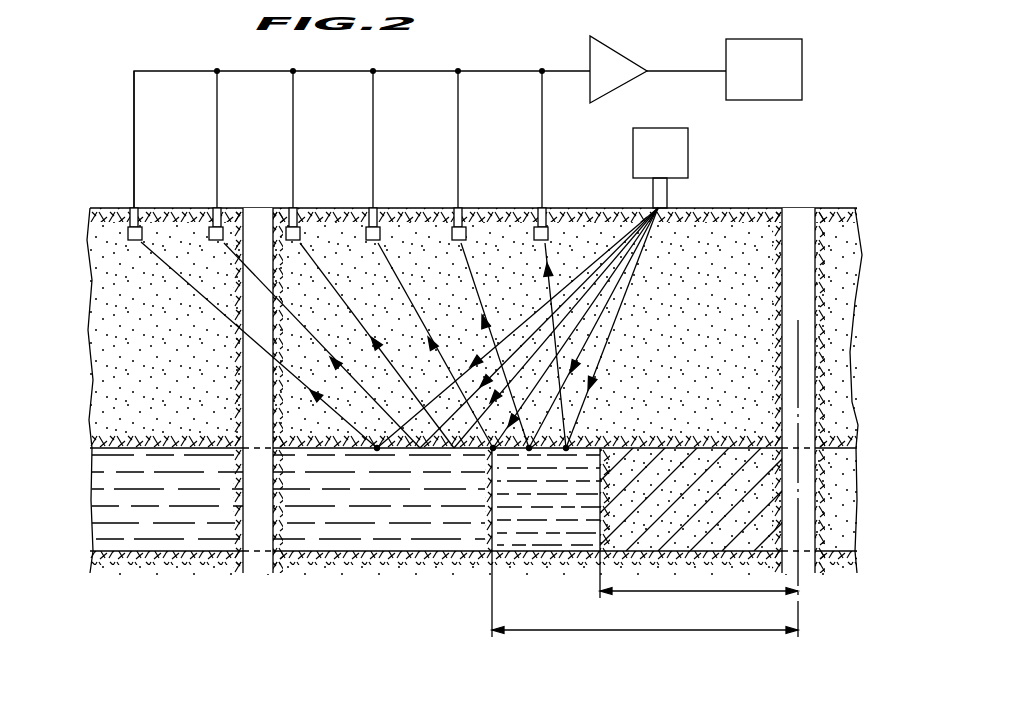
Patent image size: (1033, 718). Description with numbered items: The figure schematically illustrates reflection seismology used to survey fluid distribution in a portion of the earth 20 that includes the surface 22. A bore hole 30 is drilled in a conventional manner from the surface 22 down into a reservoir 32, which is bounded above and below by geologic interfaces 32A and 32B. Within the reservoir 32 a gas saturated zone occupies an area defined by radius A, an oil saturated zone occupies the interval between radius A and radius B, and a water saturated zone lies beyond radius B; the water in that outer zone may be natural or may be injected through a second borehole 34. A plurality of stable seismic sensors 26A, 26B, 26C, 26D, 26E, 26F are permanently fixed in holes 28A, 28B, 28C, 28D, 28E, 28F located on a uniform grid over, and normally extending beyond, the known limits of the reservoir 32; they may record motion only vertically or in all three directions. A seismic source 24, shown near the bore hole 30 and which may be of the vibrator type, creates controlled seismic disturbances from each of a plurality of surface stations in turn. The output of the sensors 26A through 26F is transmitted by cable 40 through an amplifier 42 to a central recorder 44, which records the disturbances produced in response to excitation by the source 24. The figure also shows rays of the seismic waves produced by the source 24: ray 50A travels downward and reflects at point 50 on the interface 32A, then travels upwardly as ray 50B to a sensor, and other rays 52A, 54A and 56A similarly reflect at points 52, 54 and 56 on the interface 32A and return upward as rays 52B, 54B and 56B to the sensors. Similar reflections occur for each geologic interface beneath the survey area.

The earth 20 is at (138, 315).
The surface 22 is at (101, 208).
The seismic source 24 is at (667, 127).
The seismic sensor 26A is at (534, 235).
The seismic sensor 26B is at (451, 233).
The seismic sensor 26C is at (365, 230).
The seismic sensor 26D is at (286, 230).
The seismic sensor 26E is at (210, 228).
The seismic sensor 26F is at (125, 228).
The hole 28A is at (556, 216).
The hole 28B is at (467, 241).
The hole 28C is at (382, 241).
The hole 28D is at (301, 241).
The hole 28E is at (217, 241).
The hole 28F is at (136, 241).
The bore hole 30 is at (816, 323).
The reservoir 32 is at (117, 517).
The geologic interface 32A is at (142, 446).
The geologic interface 32B is at (142, 553).
The second borehole 34 is at (243, 350).
The cable 40 is at (388, 71).
The amplifier 42 is at (623, 52).
The recorder 44 is at (803, 87).
The reflection point 50 is at (566, 450).
The seismic ray 50A is at (641, 256).
The reflected ray 50B is at (548, 280).
The reflection point 52 is at (529, 450).
The seismic ray 52A is at (603, 313).
The reflected ray 52B is at (476, 289).
The reflection point 54 is at (492, 450).
The seismic ray 54A is at (568, 342).
The reflected ray 54B is at (393, 272).
The reflection point 56 is at (376, 450).
The seismic ray 56A is at (582, 274).
The reflected ray 56B is at (330, 407).
The radius A is at (702, 592).
The radius B is at (605, 630).